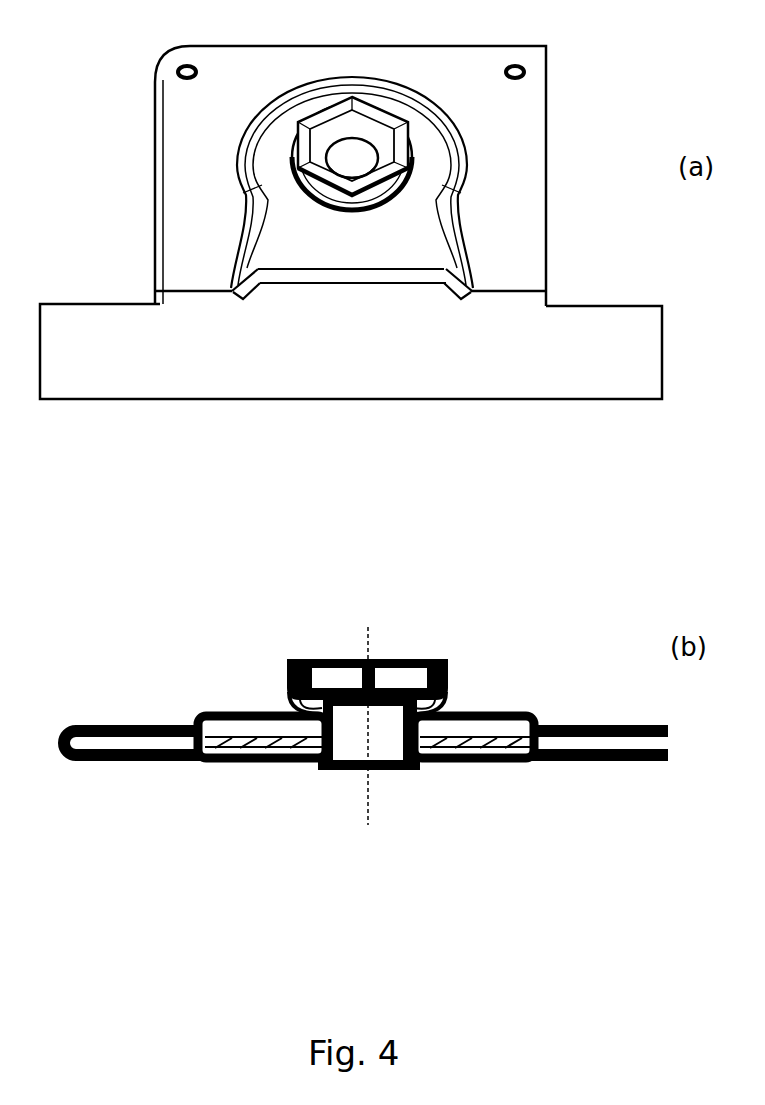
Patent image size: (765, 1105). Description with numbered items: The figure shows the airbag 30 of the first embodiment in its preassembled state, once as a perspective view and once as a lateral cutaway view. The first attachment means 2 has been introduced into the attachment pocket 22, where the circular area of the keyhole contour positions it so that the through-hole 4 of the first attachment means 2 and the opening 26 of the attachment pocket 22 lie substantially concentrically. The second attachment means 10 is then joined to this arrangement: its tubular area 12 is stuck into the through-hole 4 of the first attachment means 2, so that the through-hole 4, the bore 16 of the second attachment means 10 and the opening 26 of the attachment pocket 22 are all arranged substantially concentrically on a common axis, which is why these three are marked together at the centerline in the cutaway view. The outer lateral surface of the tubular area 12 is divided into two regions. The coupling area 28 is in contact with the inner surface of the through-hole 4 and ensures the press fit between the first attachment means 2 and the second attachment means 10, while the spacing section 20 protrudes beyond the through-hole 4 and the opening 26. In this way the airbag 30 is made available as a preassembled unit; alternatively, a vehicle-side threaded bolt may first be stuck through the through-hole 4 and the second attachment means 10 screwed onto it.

The airbag 30 is at (64, 44).
The second attachment means 10 is at (296, 630).
The attachment pocket 22 is at (203, 695).
The first attachment means 2 is at (237, 758).
The tubular area 12 is at (592, 627).
The coupling area 28 is at (447, 702).
The spacing section 20 is at (500, 712).
The through-hole 4 is at (358, 749).
The bore 16 is at (358, 749).
The opening 26 is at (358, 749).